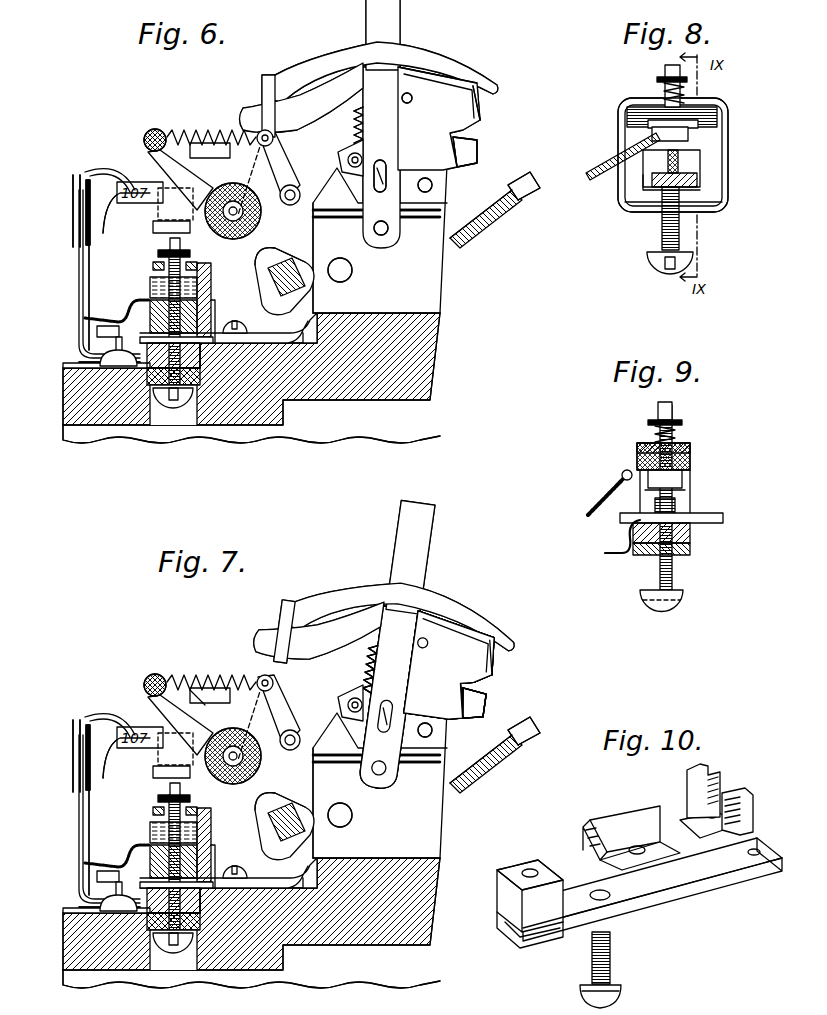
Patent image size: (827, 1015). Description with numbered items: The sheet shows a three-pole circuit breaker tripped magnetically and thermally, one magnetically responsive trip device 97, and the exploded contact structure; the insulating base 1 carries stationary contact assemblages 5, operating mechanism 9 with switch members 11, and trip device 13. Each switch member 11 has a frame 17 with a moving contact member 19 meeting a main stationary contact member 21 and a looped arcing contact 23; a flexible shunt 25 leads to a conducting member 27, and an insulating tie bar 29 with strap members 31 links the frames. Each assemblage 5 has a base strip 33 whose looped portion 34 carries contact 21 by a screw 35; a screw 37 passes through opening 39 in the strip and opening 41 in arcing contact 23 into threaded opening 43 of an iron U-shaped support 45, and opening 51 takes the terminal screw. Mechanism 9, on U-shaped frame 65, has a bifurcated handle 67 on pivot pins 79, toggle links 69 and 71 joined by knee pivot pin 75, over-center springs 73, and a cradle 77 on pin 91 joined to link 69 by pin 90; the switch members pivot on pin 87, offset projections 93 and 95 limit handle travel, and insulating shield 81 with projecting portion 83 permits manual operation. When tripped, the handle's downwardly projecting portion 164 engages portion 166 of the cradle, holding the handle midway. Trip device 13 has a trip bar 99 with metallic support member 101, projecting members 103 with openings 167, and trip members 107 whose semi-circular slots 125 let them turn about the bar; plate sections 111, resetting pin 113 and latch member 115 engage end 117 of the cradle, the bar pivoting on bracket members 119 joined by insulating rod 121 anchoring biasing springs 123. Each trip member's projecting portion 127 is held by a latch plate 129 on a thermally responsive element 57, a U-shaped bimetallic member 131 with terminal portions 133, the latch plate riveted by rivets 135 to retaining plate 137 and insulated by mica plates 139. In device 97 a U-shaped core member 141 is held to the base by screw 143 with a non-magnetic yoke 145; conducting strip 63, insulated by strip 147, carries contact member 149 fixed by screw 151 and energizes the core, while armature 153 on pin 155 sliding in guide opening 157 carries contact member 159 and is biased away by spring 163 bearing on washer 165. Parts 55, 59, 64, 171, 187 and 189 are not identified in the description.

In FIG. 6, the base 1 is at (405, 382).
In FIG. 7, the base 1 is at (405, 932).
In FIG. 10, the guide bar assembly 5 is at (606, 783).
In FIG. 6, the rack segment 9 is at (344, 137).
In FIG. 7, the rack segment 9 is at (352, 688).
In FIG. 6, the clamp member 11 is at (522, 186).
In FIG. 7, the clamp member 11 is at (522, 732).
In FIG. 6, the mechanism 13 is at (124, 130).
In FIG. 7, the mechanism 13 is at (96, 683).
In FIG. 6, the tilted block 17 is at (300, 258).
In FIG. 7, the tilted block 17 is at (298, 805).
In FIG. 6, the clamp block 19 is at (528, 194).
In FIG. 7, the clamp block 19 is at (528, 740).
In FIG. 10, the end block 21 is at (520, 860).
In FIG. 10, the block 23 is at (585, 838).
In FIG. 6, the clamp strip 25 is at (478, 226).
In FIG. 7, the clamp strip 25 is at (478, 770).
In FIG. 6, the plate bottom edge 27 is at (340, 312).
In FIG. 7, the plate bottom edge 27 is at (345, 857).
In FIG. 6, the plate flange 29 is at (300, 293).
In FIG. 7, the plate flange 29 is at (300, 842).
In FIG. 6, the housing 31 is at (318, 268).
In FIG. 7, the housing 31 is at (318, 815).
In FIG. 10, the guide bar 33 is at (716, 880).
In FIG. 10, the bracket 34 is at (505, 940).
In FIG. 10, the hole 35 is at (532, 868).
In FIG. 10, the screw 37 is at (612, 962).
In FIG. 10, the hole 39 is at (610, 897).
In FIG. 10, the clip hole 41 is at (646, 848).
In FIG. 10, the clip base 43 is at (708, 814).
In FIG. 10, the stop member 45 is at (722, 780).
In FIG. 10, the hole 51 is at (756, 856).
In FIG. 6, the bottom plate 55 is at (63, 366).
In FIG. 7, the bottom plate 55 is at (63, 912).
In FIG. 6, the terminal 57 is at (56, 211).
In FIG. 7, the terminal 57 is at (56, 733).
In FIG. 6, the foot 59 is at (104, 350).
In FIG. 7, the foot 59 is at (100, 895).
In FIG. 6, the plate 63 is at (225, 343).
In FIG. 7, the plate 63 is at (235, 888).
In FIG. 8, the plate 63 is at (660, 192).
In FIG. 9, the plate 63 is at (725, 516).
In FIG. 6, the cap 64 is at (236, 326).
In FIG. 7, the cap 64 is at (236, 870).
In FIG. 6, the side plate 65 is at (435, 285).
In FIG. 7, the side plate 65 is at (435, 830).
In FIG. 6, the lever 67 is at (393, 140).
In FIG. 7, the lever 67 is at (402, 698).
In FIG. 6, the bracket 69 is at (413, 105).
In FIG. 7, the bracket 69 is at (425, 676).
In FIG. 6, the pivot 71 is at (350, 160).
In FIG. 7, the pivot 71 is at (352, 705).
In FIG. 6, the rack teeth 73 is at (360, 115).
In FIG. 7, the rack teeth 73 is at (368, 690).
In FIG. 6, the slot 75 is at (386, 163).
In FIG. 7, the slot 75 is at (396, 716).
In FIG. 6, the bracket edge 77 is at (484, 92).
In FIG. 7, the bracket edge 77 is at (498, 650).
In FIG. 6, the pivot hole 79 is at (385, 232).
In FIG. 7, the pivot hole 79 is at (385, 778).
In FIG. 6, the handle arm 81 is at (356, 40).
In FIG. 7, the handle arm 81 is at (345, 600).
In FIG. 6, the post 83 is at (383, 35).
In FIG. 7, the post 83 is at (427, 535).
In FIG. 6, the hole 87 is at (352, 272).
In FIG. 7, the hole 87 is at (352, 817).
In FIG. 6, the hole 90 is at (408, 95).
In FIG. 7, the hole 90 is at (418, 652).
In FIG. 6, the hole 91 is at (432, 184).
In FIG. 7, the hole 91 is at (432, 730).
In FIG. 6, the rail 93 is at (320, 215).
In FIG. 7, the rail 93 is at (320, 763).
In FIG. 6, the plate edge 95 is at (440, 203).
In FIG. 7, the plate edge 95 is at (440, 748).
In FIG. 8, the contact assembly 97 is at (612, 249).
In FIG. 9, the contact assembly 97 is at (748, 471).
In FIG. 6, the hub 99 is at (222, 198).
In FIG. 7, the hub 99 is at (224, 740).
In FIG. 6, the hub shaft 101 is at (262, 225).
In FIG. 7, the hub shaft 101 is at (262, 770).
In FIG. 6, the nut 103 is at (153, 228).
In FIG. 7, the nut 103 is at (153, 776).
In FIG. 6, the arm 107 is at (263, 110).
In FIG. 7, the arm 107 is at (282, 715).
In FIG. 6, the pivot pin 111 is at (258, 145).
In FIG. 7, the pivot pin 111 is at (258, 680).
In FIG. 6, the roller 113 is at (294, 190).
In FIG. 7, the roller 113 is at (298, 728).
In FIG. 6, the block 115 is at (215, 140).
In FIG. 7, the block 115 is at (215, 688).
In FIG. 6, the hook lever 117 is at (270, 90).
In FIG. 7, the hook lever 117 is at (272, 635).
In FIG. 6, the arm 119 is at (178, 178).
In FIG. 7, the arm 119 is at (175, 722).
In FIG. 6, the coil 121 is at (157, 128).
In FIG. 7, the coil 121 is at (156, 672).
In FIG. 6, the spring 123 is at (210, 130).
In FIG. 7, the spring 123 is at (195, 672).
In FIG. 6, the link 125 is at (283, 170).
In FIG. 7, the link 125 is at (285, 742).
In FIG. 6, the wire 127 is at (90, 172).
In FIG. 7, the wire 127 is at (98, 745).
In FIG. 6, the housing edge 129 is at (96, 238).
In FIG. 7, the housing edge 129 is at (100, 790).
In FIG. 6, the bracket 131 is at (79, 262).
In FIG. 7, the bracket 131 is at (79, 812).
In FIG. 6, the bracket foot 133 is at (88, 358).
In FIG. 7, the bracket foot 133 is at (88, 903).
In FIG. 6, the pin 135 is at (72, 226).
In FIG. 7, the pin 135 is at (72, 772).
In FIG. 6, the pin 137 is at (72, 196).
In FIG. 7, the pin 137 is at (72, 758).
In FIG. 6, the pin 139 is at (73, 182).
In FIG. 7, the pin 139 is at (72, 722).
In FIG. 6, the block 141 is at (200, 360).
In FIG. 7, the block 141 is at (200, 905).
In FIG. 8, the block 141 is at (715, 195).
In FIG. 9, the block 141 is at (692, 535).
In FIG. 6, the screw 143 is at (180, 420).
In FIG. 7, the screw 143 is at (185, 965).
In FIG. 8, the screw 143 is at (693, 257).
In FIG. 9, the screw 143 is at (685, 598).
In FIG. 6, the nut 145 is at (198, 378).
In FIG. 7, the nut 145 is at (198, 924).
In FIG. 8, the nut 145 is at (705, 142).
In FIG. 9, the nut 145 is at (692, 549).
In FIG. 6, the screw head 147 is at (173, 405).
In FIG. 7, the screw head 147 is at (173, 950).
In FIG. 8, the screw head 147 is at (700, 183).
In FIG. 9, the screw head 147 is at (633, 556).
In FIG. 6, the frame 149 is at (215, 322).
In FIG. 7, the frame 149 is at (215, 885).
In FIG. 8, the frame 149 is at (648, 175).
In FIG. 9, the frame 149 is at (645, 505).
In FIG. 6, the plate 151 is at (152, 338).
In FIG. 7, the plate 151 is at (152, 882).
In FIG. 8, the plate 151 is at (700, 158).
In FIG. 9, the plate 151 is at (690, 505).
In FIG. 6, the block 153 is at (150, 290).
In FIG. 7, the block 153 is at (150, 830).
In FIG. 8, the block 153 is at (700, 118).
In FIG. 9, the block 153 is at (690, 455).
In FIG. 6, the screw tip 155 is at (181, 250).
In FIG. 7, the screw tip 155 is at (182, 797).
In FIG. 8, the screw tip 155 is at (665, 69).
In FIG. 9, the screw tip 155 is at (658, 410).
In FIG. 6, the column 157 is at (211, 272).
In FIG. 7, the column 157 is at (211, 818).
In FIG. 8, the column 157 is at (700, 110).
In FIG. 9, the column 157 is at (688, 446).
In FIG. 6, the insulating block 159 is at (150, 312).
In FIG. 7, the insulating block 159 is at (197, 845).
In FIG. 8, the insulating block 159 is at (688, 137).
In FIG. 6, the washer 163 is at (155, 268).
In FIG. 7, the washer 163 is at (155, 812).
In FIG. 8, the washer 163 is at (660, 80).
In FIG. 9, the washer 163 is at (650, 427).
In FIG. 6, the edge strip 164 is at (482, 110).
In FIG. 7, the edge strip 164 is at (500, 662).
In FIG. 6, the spring washer 165 is at (158, 255).
In FIG. 7, the spring washer 165 is at (160, 800).
In FIG. 8, the spring washer 165 is at (664, 92).
In FIG. 9, the spring washer 165 is at (678, 420).
In FIG. 6, the lug 166 is at (478, 148).
In FIG. 7, the lug 166 is at (485, 690).
In FIG. 7, the box 167 is at (142, 753).
In FIG. 6, the cable 171 is at (85, 318).
In FIG. 7, the cable 171 is at (118, 862).
In FIG. 8, the cable 171 is at (600, 162).
In FIG. 9, the cable 171 is at (610, 468).
In FIG. 6, the dashed housing 187 is at (157, 212).
In FIG. 7, the arm 189 is at (195, 722).